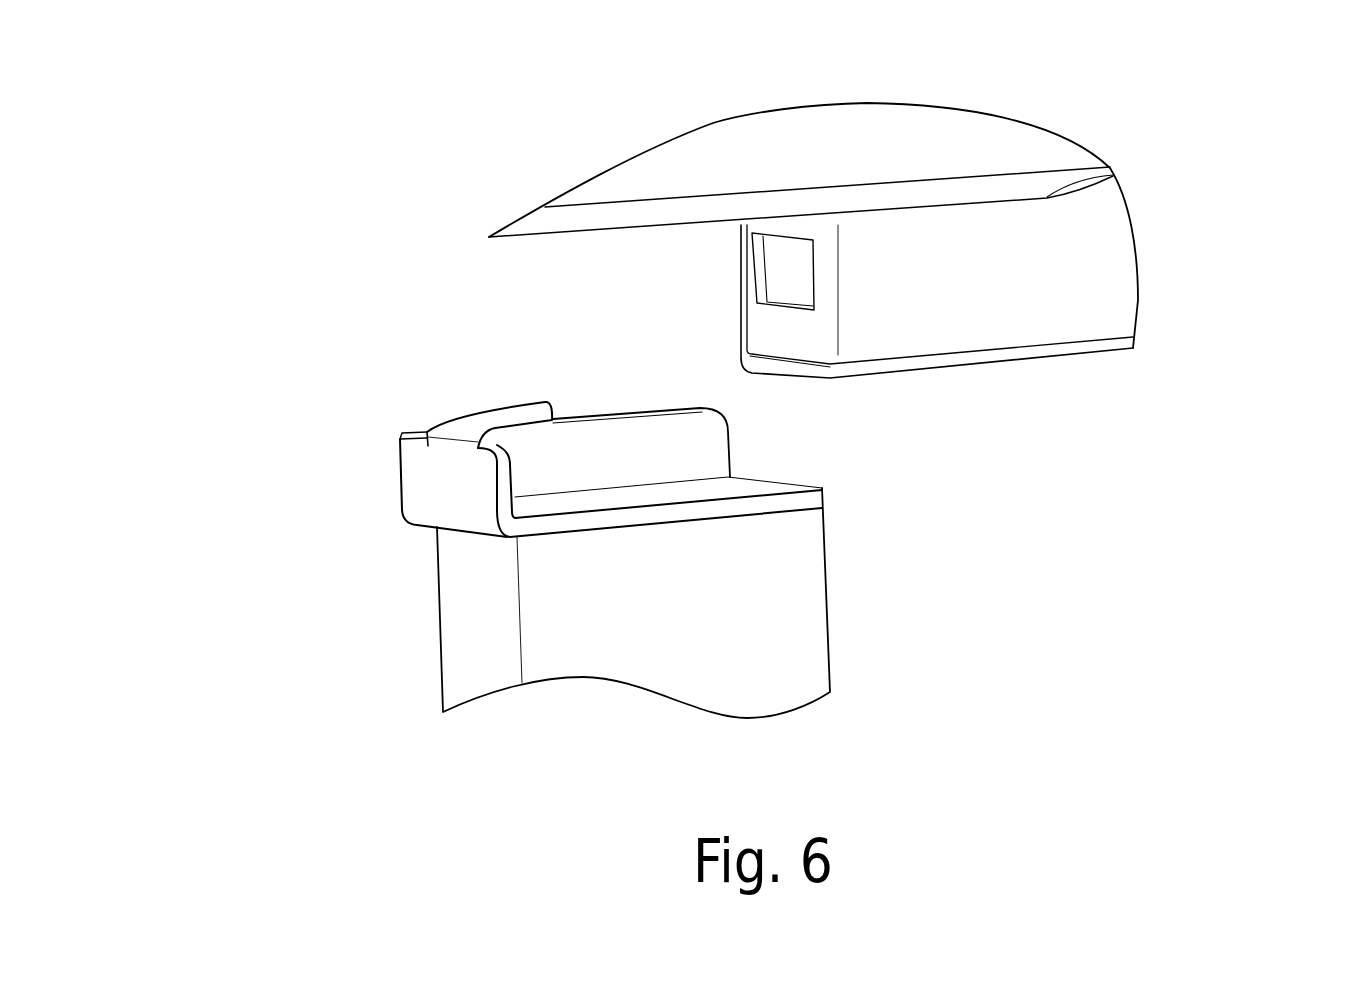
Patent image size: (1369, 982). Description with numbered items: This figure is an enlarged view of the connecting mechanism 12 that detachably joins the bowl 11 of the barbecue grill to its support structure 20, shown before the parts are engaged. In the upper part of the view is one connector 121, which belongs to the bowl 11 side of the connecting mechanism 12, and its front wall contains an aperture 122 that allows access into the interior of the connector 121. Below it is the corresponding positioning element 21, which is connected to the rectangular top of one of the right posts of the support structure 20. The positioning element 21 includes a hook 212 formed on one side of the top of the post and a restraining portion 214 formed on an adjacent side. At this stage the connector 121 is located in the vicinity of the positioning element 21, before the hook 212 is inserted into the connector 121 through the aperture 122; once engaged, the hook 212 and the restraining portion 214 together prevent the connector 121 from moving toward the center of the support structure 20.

The bowl 11 is at (1007, 143).
The connecting mechanism 12 is at (1040, 392).
The connector 121 is at (1077, 277).
The aperture 122 is at (780, 263).
The support structure 20 is at (837, 602).
The positioning element 21 is at (743, 488).
The hook 212 is at (478, 423).
The restraining portion 214 is at (617, 445).